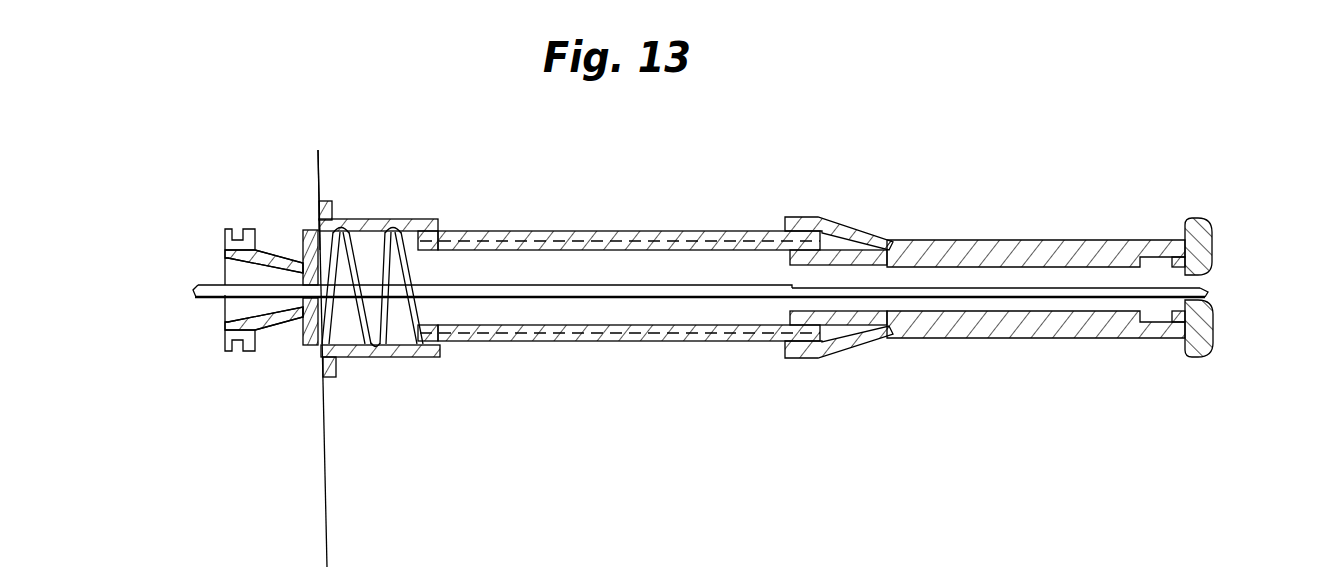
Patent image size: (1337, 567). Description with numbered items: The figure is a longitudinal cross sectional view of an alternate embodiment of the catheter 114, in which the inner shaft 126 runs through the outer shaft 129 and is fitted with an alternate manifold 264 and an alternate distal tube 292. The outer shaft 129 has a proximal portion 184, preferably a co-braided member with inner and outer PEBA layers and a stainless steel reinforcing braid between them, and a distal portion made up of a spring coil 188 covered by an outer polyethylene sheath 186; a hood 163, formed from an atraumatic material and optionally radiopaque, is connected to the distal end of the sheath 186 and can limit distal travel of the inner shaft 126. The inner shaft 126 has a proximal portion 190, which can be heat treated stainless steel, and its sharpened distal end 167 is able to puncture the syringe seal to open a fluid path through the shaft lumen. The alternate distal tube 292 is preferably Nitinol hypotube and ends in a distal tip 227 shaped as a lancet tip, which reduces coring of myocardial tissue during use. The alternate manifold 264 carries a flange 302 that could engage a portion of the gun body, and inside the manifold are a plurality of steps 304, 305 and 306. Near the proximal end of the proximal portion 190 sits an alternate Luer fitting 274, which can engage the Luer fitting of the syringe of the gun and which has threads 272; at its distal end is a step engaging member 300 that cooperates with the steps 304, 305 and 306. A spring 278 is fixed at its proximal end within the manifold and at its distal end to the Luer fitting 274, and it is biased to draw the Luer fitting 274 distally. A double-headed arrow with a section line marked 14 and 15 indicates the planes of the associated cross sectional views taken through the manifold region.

The section line for FIG. 14 is at (318, 150).
The section line for FIG. 15 is at (318, 150).
The catheter 114 is at (663, 192).
The inner shaft 126 is at (690, 300).
The outer shaft 129 is at (705, 230).
The hood 163 is at (1203, 219).
The sharpened distal end 167 is at (193, 286).
The proximal portion 184 is at (565, 231).
The outer polyethylene sheath 186 is at (980, 240).
The spring coil 188 is at (887, 248).
The proximal portion 190 is at (578, 292).
The distal tip 227 is at (1208, 291).
The alternate manifold 264 is at (442, 230).
The threads 272 is at (228, 354).
The Luer fitting 274 is at (263, 249).
The spring 278 is at (385, 358).
The alternate distal tube 292 is at (998, 297).
The step engaging member 300 is at (303, 229).
The flange 302 is at (331, 208).
The step 304 is at (323, 334).
The step 305 is at (323, 358).
The step 306 is at (362, 230).